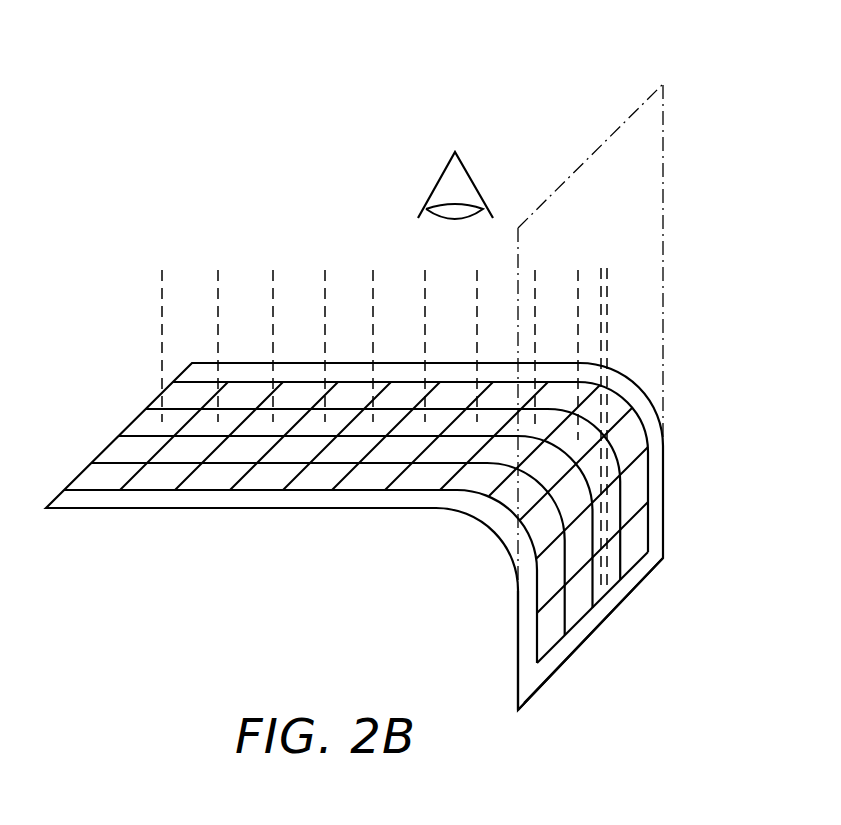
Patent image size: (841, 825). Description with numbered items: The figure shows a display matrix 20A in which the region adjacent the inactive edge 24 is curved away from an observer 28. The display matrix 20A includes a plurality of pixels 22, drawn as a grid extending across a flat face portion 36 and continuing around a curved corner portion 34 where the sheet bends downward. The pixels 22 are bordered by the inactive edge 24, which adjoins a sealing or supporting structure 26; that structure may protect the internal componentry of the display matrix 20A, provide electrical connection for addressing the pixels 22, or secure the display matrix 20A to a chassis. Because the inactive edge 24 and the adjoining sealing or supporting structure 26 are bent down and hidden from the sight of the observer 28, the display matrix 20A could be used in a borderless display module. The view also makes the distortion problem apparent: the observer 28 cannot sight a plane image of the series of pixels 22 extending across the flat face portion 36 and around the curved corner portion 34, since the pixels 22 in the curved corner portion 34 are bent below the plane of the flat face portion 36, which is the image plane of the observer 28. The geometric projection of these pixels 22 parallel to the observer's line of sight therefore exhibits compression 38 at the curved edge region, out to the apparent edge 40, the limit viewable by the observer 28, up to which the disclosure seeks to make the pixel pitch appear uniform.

The display matrix 20A is at (310, 566).
The pixels 22 is at (632, 456).
The inactive edge 24 is at (520, 678).
The sealing or supporting structure 26 is at (605, 628).
The observer 28 is at (467, 195).
The curved corner portion 34 is at (663, 365).
The flat face portion 36 is at (345, 332).
The compression 38 is at (594, 417).
The apparent edge 40 is at (590, 332).